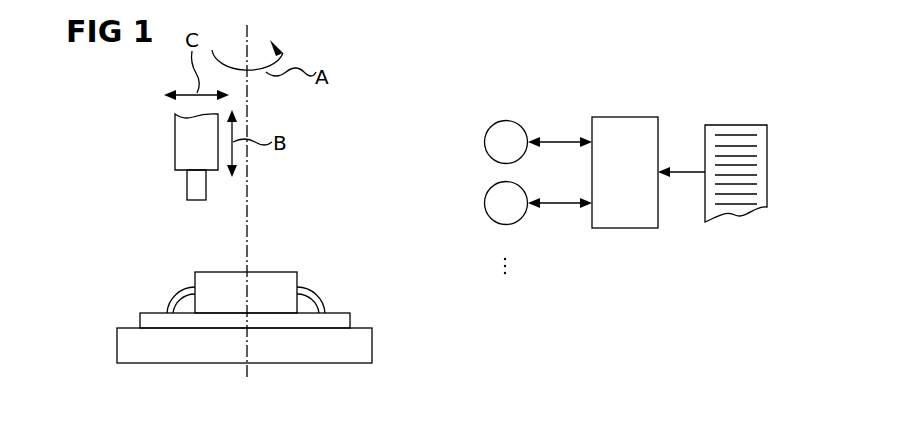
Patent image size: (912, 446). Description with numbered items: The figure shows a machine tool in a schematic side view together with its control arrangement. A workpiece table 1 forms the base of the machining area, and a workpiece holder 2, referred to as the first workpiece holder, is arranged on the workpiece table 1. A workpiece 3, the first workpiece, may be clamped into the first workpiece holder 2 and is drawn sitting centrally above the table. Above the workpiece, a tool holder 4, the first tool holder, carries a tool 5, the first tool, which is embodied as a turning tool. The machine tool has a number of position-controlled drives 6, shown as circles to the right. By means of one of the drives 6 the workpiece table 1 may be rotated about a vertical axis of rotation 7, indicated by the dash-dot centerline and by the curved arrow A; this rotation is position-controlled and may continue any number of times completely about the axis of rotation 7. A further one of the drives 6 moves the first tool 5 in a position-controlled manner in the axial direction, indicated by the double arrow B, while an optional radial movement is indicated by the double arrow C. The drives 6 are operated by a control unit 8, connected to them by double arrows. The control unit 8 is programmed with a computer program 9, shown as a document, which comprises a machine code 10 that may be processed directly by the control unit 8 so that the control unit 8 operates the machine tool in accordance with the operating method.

The workpiece table 1 is at (117, 345).
The workpiece holder 2 is at (140, 320).
The workpiece 3 is at (195, 283).
The tool holder 4 is at (175, 142).
The tool 5 is at (187, 183).
The position-controlled drives 6 is at (484, 142).
The axis of rotation 7 is at (247, 232).
The control unit 8 is at (625, 117).
The computer program 9 is at (735, 125).
The machine code 10 is at (745, 179).